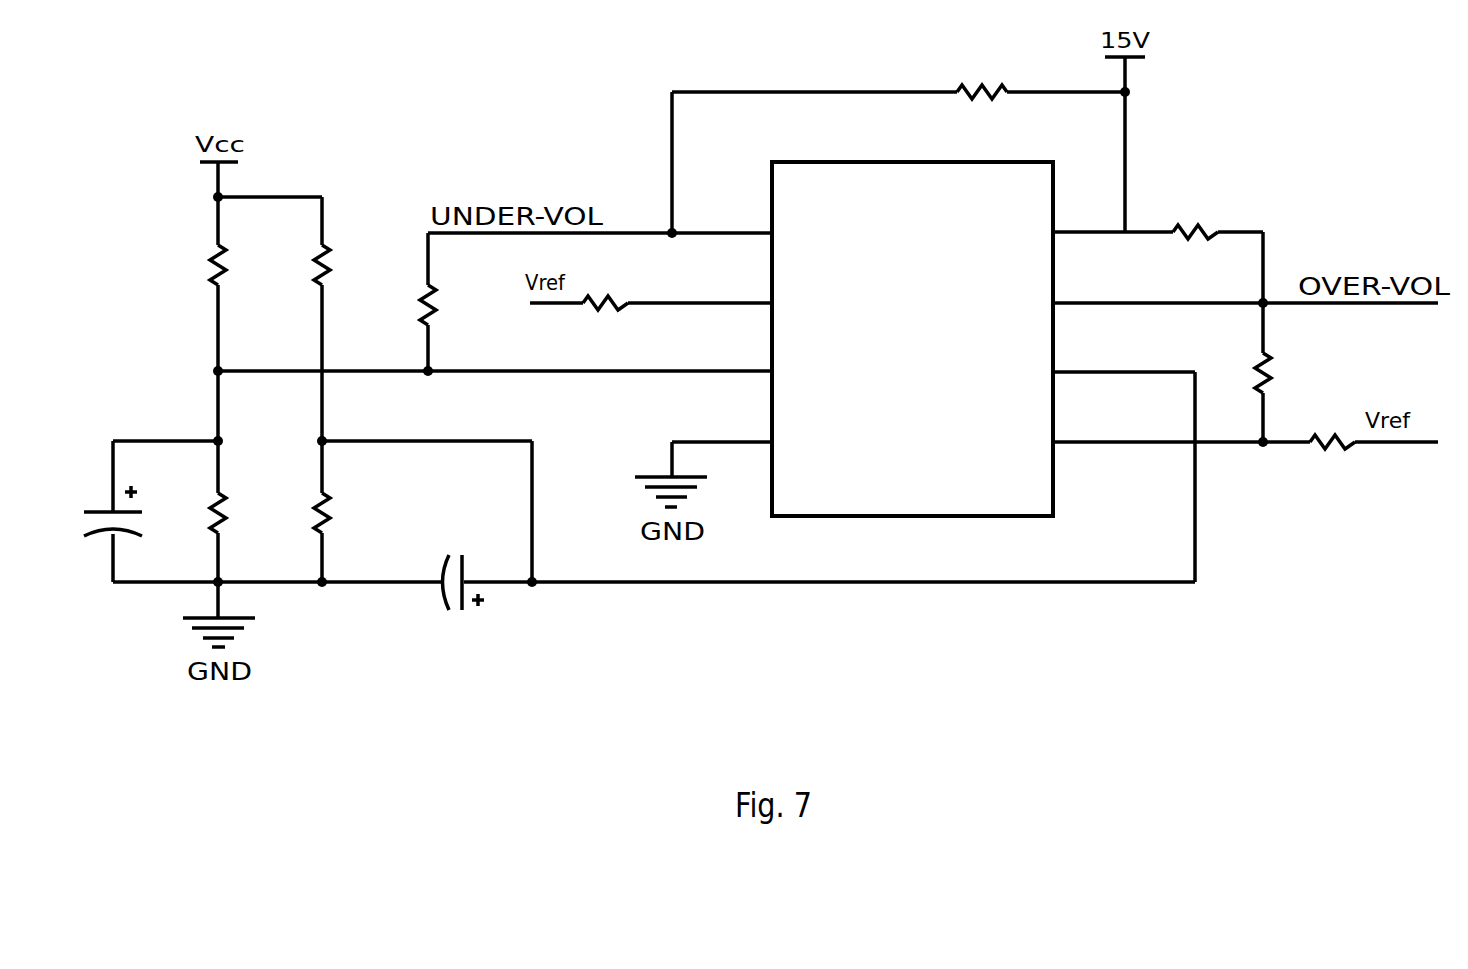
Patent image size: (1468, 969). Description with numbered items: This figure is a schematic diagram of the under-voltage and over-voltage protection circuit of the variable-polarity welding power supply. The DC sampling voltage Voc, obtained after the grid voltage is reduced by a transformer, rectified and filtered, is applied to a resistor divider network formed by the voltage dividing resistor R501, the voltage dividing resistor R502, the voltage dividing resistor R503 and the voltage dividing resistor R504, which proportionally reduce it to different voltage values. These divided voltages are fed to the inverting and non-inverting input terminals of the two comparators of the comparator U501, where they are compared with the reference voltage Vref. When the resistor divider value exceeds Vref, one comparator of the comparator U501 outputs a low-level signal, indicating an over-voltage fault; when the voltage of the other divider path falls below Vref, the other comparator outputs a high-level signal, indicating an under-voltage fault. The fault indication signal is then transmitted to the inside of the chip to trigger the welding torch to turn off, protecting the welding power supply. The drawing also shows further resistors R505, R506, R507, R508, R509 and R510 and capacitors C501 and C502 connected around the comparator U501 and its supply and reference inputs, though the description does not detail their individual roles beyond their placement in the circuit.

The voltage dividing resistor R501 is at (255, 262).
The voltage dividing resistor R502 is at (250, 507).
The voltage dividing resistor R503 is at (359, 262).
The voltage dividing resistor R504 is at (362, 507).
The resistor R505 is at (465, 302).
The resistor R506 is at (651, 322).
The resistor R507 is at (898, 72).
The resistor R508 is at (1158, 220).
The resistor R509 is at (1303, 337).
The resistor R510 is at (1245, 463).
The capacitor C501 is at (144, 511).
The capacitor C502 is at (457, 566).
The comparator U501 is at (914, 337).